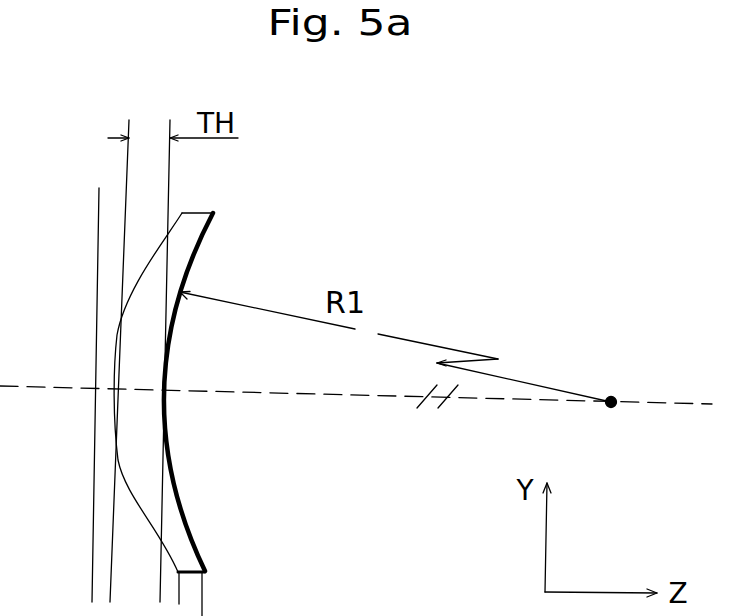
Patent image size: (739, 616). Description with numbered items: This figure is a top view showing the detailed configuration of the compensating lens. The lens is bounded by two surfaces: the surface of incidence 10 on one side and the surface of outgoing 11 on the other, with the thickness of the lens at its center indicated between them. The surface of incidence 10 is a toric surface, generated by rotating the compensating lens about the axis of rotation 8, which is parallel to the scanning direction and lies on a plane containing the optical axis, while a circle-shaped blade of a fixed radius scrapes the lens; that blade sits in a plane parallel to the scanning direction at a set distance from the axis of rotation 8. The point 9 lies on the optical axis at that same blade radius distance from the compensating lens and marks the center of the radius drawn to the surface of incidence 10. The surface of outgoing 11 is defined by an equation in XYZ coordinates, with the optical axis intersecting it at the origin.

The axis of rotation 8 is at (97, 233).
The point on the optical axis 9 is at (613, 397).
The surface of incidence 10 is at (203, 240).
The surface of outgoing 11 is at (156, 246).